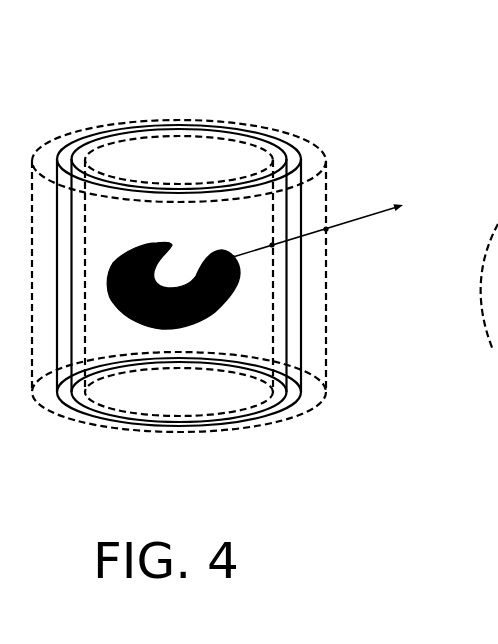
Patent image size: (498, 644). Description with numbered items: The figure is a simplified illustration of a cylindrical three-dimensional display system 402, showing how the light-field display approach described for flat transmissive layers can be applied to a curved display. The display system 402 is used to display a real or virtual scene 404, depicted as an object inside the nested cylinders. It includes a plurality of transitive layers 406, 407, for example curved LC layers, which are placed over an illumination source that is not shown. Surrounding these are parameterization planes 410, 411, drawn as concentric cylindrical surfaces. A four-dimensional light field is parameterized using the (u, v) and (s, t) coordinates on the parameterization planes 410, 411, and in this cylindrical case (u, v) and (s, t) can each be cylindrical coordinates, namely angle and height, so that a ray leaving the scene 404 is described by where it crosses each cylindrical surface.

The cylindrical 3D display system 402 is at (232, 256).
The real or virtual scene 404 is at (185, 328).
The transitive layer 406 is at (287, 292).
The transitive layer 407 is at (300, 343).
The parameterization plane 410 is at (58, 137).
The parameterization plane 411 is at (88, 135).